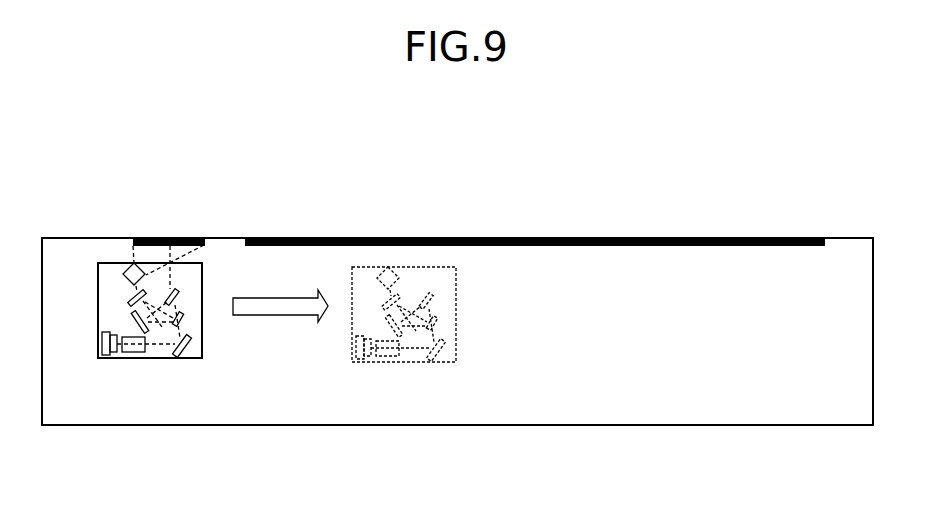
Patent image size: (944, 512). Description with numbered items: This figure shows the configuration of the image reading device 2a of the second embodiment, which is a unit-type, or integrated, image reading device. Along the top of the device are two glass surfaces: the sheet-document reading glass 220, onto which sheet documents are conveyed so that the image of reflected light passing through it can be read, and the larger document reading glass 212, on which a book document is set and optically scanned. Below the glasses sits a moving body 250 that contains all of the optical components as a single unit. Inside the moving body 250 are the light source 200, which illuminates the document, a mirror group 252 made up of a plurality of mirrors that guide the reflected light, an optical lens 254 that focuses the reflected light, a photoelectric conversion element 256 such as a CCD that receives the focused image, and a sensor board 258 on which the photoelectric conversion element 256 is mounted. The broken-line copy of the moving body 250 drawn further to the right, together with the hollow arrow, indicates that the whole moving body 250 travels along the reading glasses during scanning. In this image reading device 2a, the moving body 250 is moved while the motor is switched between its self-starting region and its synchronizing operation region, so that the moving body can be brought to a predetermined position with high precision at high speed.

The image reading device 2a is at (764, 182).
The document reading glass 212 is at (457, 238).
The sheet-document reading glass 220 is at (191, 238).
The moving body 250 is at (98, 288).
The light source 200 is at (128, 268).
The mirror group 252 is at (187, 355).
The optical lens 254 is at (132, 358).
The photoelectric conversion element 256 is at (110, 358).
The sensor board 258 is at (103, 358).